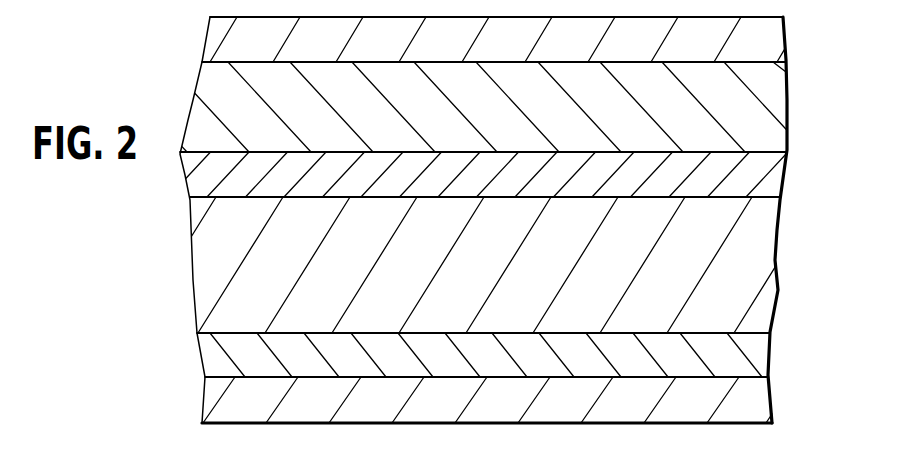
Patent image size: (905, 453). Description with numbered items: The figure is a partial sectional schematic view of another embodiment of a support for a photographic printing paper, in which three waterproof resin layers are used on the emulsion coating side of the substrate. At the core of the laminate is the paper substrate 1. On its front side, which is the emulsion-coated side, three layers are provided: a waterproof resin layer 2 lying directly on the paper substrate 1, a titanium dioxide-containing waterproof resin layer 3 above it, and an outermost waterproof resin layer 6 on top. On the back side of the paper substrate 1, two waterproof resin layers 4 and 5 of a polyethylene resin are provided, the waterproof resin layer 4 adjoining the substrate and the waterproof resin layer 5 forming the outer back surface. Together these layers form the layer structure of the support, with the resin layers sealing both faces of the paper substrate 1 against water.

The paper substrate 1 is at (753, 262).
The waterproof resin layer 2 is at (760, 170).
The titanium dioxide-containing waterproof resin layer 3 is at (753, 113).
The waterproof resin layer 4 is at (732, 355).
The waterproof resin layer 5 is at (745, 400).
The waterproof resin layer 6 is at (765, 39).